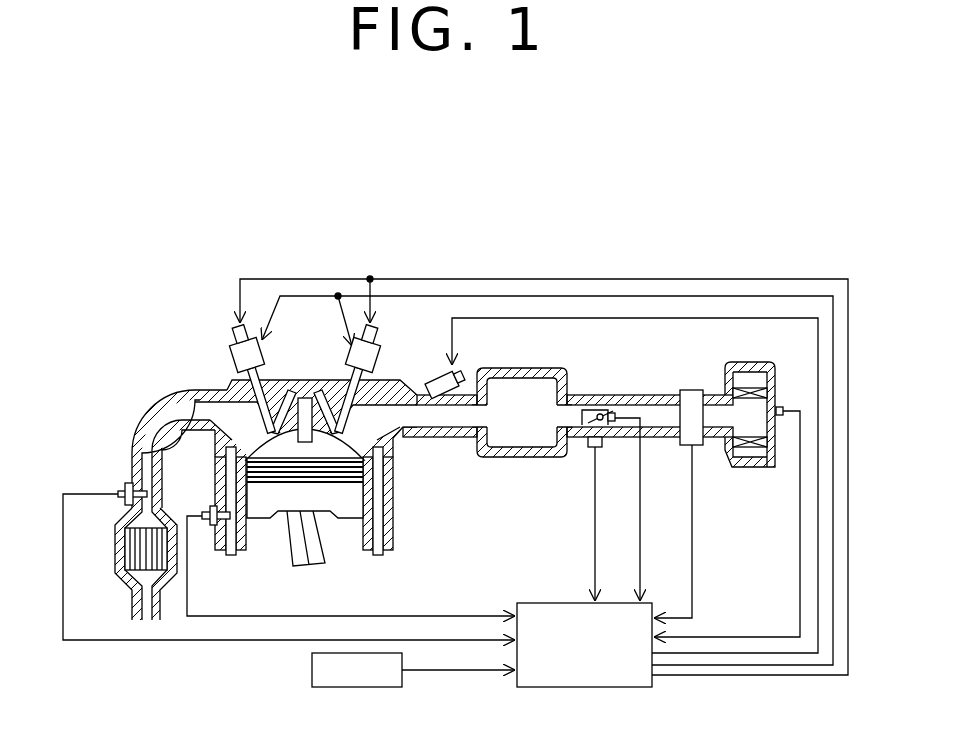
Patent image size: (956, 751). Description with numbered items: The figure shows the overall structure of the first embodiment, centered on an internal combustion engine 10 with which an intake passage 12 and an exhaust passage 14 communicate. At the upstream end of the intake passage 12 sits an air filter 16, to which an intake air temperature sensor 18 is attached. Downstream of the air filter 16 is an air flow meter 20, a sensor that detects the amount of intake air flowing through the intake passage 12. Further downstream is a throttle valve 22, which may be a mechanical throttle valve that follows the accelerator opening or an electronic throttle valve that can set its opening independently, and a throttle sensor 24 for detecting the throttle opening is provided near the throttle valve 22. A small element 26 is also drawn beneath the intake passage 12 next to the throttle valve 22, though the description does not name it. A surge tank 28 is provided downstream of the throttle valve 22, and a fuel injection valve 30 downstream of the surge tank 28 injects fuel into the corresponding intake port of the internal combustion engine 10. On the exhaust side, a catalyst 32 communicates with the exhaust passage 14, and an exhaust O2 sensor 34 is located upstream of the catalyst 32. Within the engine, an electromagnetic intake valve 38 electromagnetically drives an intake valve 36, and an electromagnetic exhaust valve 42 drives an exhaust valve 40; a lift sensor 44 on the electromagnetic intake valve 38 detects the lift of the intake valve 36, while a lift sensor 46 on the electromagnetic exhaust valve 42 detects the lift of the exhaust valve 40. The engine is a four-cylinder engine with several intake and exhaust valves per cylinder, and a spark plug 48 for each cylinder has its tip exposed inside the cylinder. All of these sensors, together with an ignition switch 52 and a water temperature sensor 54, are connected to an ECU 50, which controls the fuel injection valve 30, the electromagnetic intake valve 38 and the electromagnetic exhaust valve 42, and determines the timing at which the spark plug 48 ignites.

The internal combustion engine 10 is at (318, 431).
The intake passage 12 is at (571, 392).
The exhaust passage 14 is at (133, 416).
The air filter 16 is at (750, 363).
The intake air temperature sensor 18 is at (778, 406).
The air flow meter 20 is at (690, 404).
The throttle valve 22 is at (606, 403).
The throttle sensor 24 is at (621, 432).
The intake pressure sensor 26 is at (591, 449).
The surge tank 28 is at (505, 371).
The fuel injection valve 30 is at (442, 373).
The catalyst 32 is at (117, 550).
The exhaust O2 sensor 34 is at (120, 490).
The intake valve 36 is at (348, 403).
The electromagnetic intake valve 38 is at (378, 360).
The exhaust valve 40 is at (270, 416).
The electromagnetic exhaust valve 42 is at (233, 358).
The lift sensor 44 is at (378, 336).
The lift sensor 46 is at (236, 336).
The spark plug 48 is at (304, 397).
The ECU (Electronic Control Unit) 50 is at (531, 688).
The ignition switch 52 is at (312, 668).
The water temperature sensor 54 is at (207, 511).